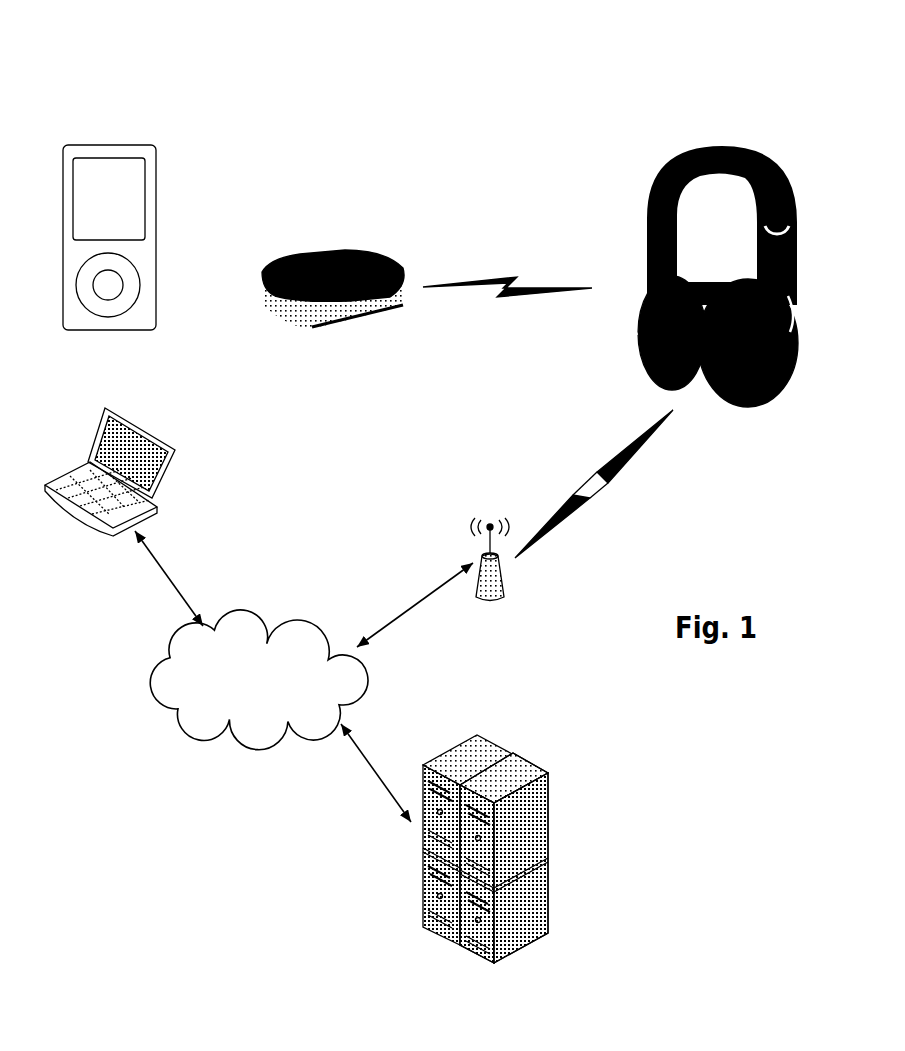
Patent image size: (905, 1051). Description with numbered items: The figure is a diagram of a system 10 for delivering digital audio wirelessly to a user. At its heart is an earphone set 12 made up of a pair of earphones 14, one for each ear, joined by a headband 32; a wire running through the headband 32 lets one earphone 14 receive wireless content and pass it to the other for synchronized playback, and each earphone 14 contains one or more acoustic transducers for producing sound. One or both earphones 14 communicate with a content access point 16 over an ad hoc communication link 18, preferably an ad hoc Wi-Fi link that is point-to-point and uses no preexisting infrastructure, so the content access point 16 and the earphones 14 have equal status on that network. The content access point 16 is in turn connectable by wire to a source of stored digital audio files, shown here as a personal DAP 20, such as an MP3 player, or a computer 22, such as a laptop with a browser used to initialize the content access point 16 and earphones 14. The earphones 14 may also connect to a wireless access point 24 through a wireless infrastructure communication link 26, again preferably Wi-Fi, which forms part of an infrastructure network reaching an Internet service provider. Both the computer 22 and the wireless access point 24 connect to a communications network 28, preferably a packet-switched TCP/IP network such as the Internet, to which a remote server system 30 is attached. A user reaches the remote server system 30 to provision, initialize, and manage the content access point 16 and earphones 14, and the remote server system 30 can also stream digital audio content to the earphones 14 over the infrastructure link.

The system 10 is at (451, 519).
The earphone set 12 is at (710, 247).
The earphones 14 is at (702, 341).
The content access point 16 is at (339, 268).
The ad hoc communication link 18 is at (507, 259).
The personal DAP 20 is at (140, 237).
The computer 22 is at (101, 462).
The wireless access point 24 is at (524, 563).
The wireless infrastructure communication link 26 is at (600, 484).
The communications network 28 is at (259, 655).
The remote server system 30 is at (516, 875).
The headband 32 is at (722, 196).